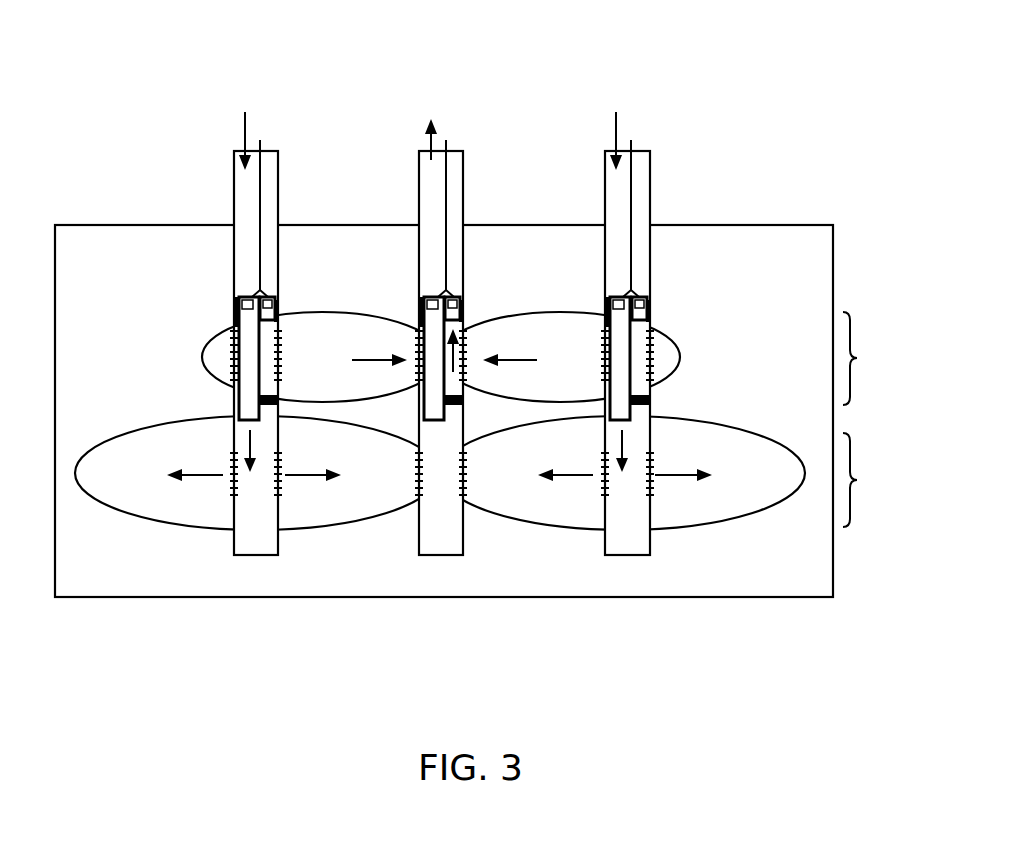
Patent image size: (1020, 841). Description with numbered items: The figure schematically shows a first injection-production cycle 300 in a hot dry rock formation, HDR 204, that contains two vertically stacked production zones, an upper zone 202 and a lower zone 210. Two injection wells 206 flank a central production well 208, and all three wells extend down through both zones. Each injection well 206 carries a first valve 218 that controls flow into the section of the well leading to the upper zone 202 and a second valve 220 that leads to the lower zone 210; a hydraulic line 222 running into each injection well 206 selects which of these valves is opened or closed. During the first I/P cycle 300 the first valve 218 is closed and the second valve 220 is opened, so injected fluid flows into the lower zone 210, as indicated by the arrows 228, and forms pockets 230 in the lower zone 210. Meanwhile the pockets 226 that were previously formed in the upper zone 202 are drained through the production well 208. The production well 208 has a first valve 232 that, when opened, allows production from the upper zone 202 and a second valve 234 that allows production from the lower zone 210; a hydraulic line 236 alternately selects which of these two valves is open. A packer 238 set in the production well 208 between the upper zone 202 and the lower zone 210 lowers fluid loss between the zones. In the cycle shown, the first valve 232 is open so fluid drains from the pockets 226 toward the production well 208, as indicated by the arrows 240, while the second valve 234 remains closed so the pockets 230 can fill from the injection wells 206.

The first injection-production cycle 300 is at (570, 27).
The upper zone 202 is at (872, 358).
The HDR 204 is at (112, 224).
The injection wells 206 is at (233, 197).
The production well 208 is at (418, 197).
The lower zone 210 is at (872, 480).
The first valve 218 is at (270, 296).
The second valve 220 is at (249, 296).
The hydraulic line 222 is at (262, 142).
The pockets 226 is at (213, 343).
The arrows 228 is at (244, 122).
The pockets 230 is at (164, 420).
The first valve 232 is at (456, 296).
The second valve 234 is at (434, 296).
The hydraulic line 236 is at (448, 142).
The packer 238 is at (464, 401).
The arrows 240 is at (429, 142).